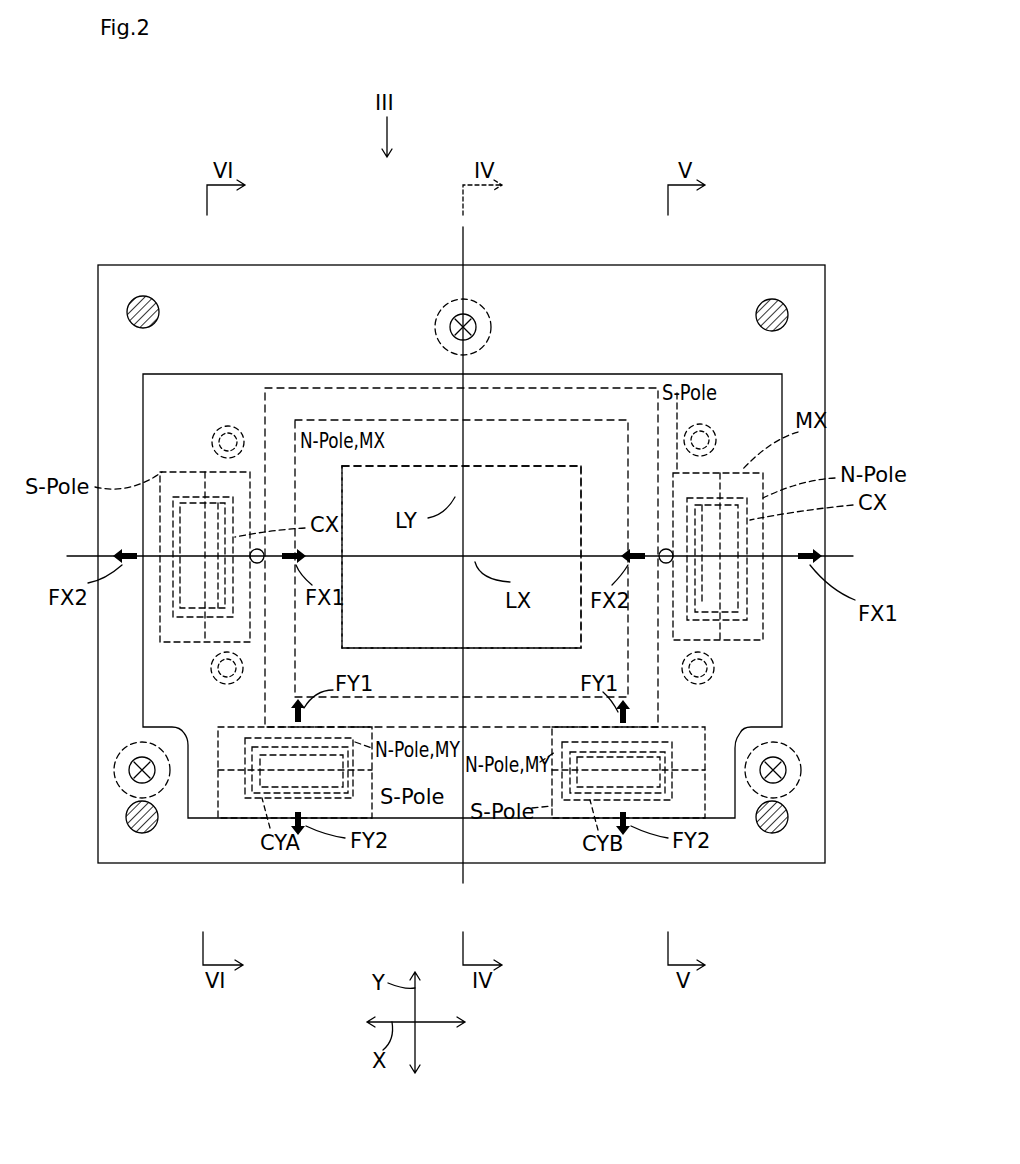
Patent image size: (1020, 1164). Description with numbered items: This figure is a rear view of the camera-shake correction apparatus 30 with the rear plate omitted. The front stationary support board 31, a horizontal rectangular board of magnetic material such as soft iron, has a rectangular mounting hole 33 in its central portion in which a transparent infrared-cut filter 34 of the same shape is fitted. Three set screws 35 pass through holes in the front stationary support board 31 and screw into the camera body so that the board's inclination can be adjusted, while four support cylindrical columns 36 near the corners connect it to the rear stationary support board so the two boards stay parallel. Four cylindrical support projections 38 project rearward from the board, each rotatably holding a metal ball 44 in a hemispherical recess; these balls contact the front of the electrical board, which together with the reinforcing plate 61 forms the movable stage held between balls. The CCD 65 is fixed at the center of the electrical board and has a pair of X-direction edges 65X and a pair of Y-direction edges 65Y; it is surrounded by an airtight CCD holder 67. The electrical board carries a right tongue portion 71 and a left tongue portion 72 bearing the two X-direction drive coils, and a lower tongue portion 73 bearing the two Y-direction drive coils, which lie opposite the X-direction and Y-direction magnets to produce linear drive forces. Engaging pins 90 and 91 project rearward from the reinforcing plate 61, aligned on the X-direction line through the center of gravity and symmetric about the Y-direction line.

The camera-shake correction apparatus 30 is at (158, 898).
The front stationary support board 31 is at (710, 268).
The rectangular mounting hole 33 is at (300, 390).
The infrared-cut filter 34 is at (562, 388).
The set screws 35 is at (476, 327).
The support cylindrical columns 36 is at (160, 312).
The cylindrical support projections 38 is at (214, 446).
The metal balls 44 is at (220, 434).
The reinforcing plate 61 is at (632, 377).
The CCD 65 is at (512, 487).
The X-direction edges 65X is at (388, 462).
The Y-direction edges 65Y is at (586, 505).
The CCD holder 67 is at (355, 388).
The right tongue portion 71 is at (782, 680).
The left tongue portion 72 is at (147, 657).
The lower tongue portion 73 is at (452, 818).
The engaging pin 90 is at (259, 565).
The engaging pin 91 is at (666, 565).